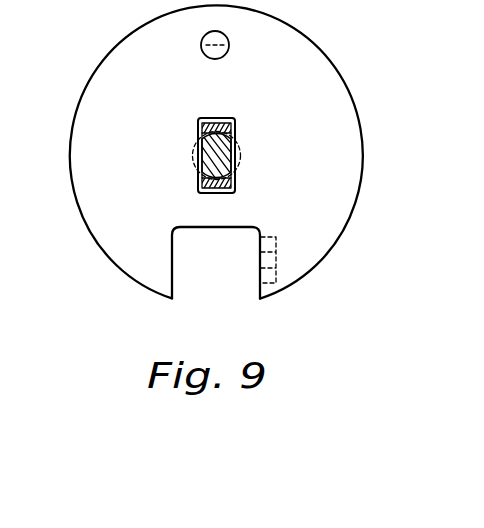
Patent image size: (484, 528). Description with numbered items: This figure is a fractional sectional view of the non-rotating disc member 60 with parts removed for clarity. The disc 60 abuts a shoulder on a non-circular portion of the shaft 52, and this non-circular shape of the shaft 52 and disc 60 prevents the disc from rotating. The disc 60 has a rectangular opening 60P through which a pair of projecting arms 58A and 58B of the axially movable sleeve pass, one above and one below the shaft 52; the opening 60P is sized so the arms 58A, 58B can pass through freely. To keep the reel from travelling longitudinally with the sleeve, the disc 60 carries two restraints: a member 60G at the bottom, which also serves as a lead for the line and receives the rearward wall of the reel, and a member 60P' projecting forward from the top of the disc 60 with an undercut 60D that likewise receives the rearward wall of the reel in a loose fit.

The disc member 60 is at (343, 134).
The member 60G is at (277, 269).
The undercut 60D is at (231, 48).
The member 60P' is at (133, 27).
The rectangular opening 60P is at (248, 145).
The projecting arm 58A is at (220, 119).
The projecting arm 58B is at (217, 192).
The shaft 52 is at (210, 158).